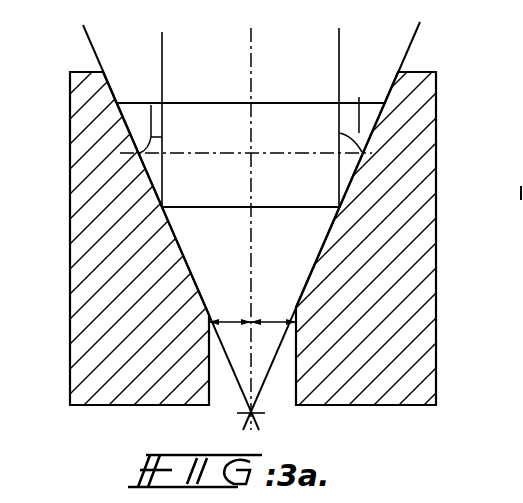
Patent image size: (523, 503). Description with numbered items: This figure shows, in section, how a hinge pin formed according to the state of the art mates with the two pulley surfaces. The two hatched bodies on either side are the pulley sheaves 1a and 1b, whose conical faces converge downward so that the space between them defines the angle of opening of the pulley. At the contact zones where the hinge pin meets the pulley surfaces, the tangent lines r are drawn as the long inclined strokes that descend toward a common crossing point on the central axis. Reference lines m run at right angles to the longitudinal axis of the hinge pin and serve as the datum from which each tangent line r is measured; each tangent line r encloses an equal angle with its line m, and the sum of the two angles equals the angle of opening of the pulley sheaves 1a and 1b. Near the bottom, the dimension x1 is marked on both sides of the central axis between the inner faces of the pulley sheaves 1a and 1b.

The pulley sheave 1a is at (76, 172).
The pulley sheave 1b is at (423, 152).
The tangent line r is at (97, 48).
The line at right angles to the longitudinal axis m is at (162, 78).
The gap half-width x1 is at (252, 310).